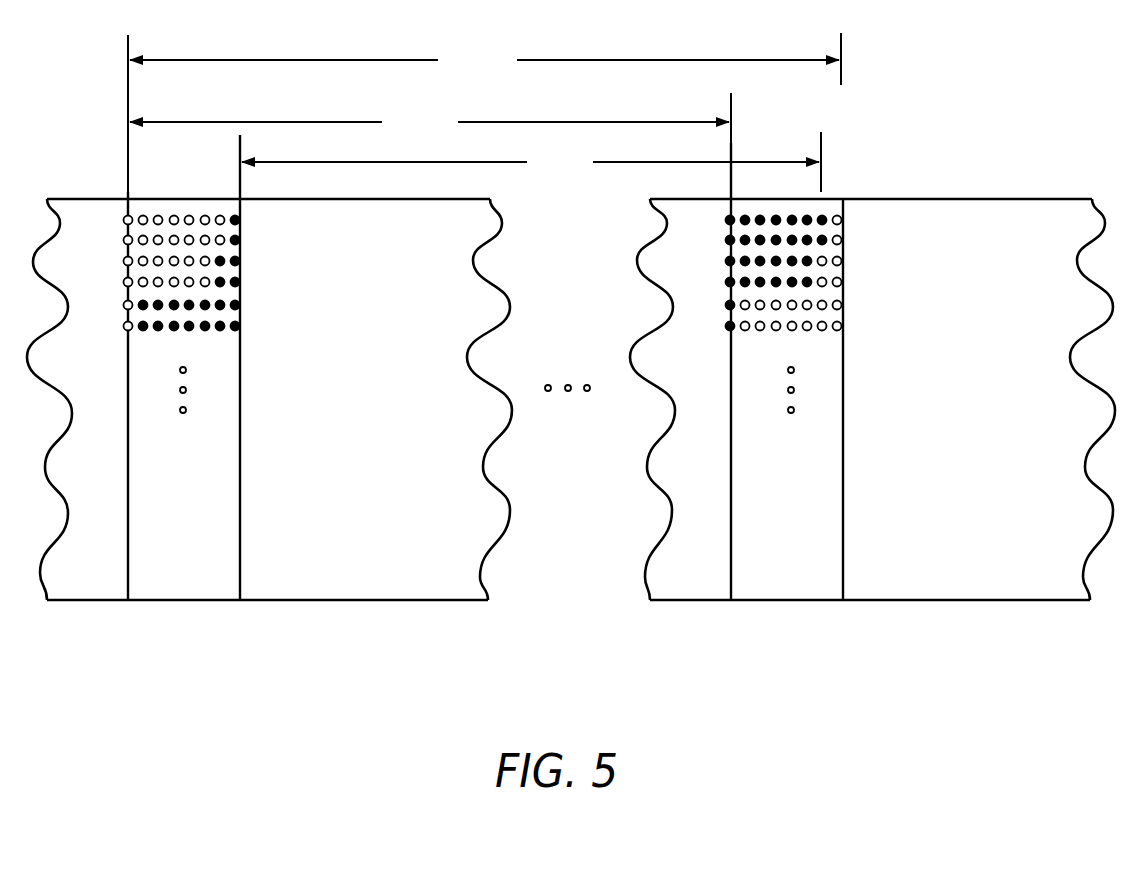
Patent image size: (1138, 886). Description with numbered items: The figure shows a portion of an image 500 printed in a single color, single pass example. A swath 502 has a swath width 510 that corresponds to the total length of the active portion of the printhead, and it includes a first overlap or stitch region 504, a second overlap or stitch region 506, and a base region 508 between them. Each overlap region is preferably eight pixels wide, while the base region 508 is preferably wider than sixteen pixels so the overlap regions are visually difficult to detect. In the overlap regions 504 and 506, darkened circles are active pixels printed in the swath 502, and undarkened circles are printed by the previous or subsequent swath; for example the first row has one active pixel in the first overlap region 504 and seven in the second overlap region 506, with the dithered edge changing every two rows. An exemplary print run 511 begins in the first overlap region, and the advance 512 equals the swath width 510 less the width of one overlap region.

The image 500 is at (946, 136).
The swath 502 is at (459, 608).
The first overlap or stitch region 504 is at (182, 367).
The second overlap or stitch region 506 is at (785, 371).
The base region 508 is at (485, 399).
The swath width 510 is at (484, 112).
The print run 511 is at (531, 162).
The advance 512 is at (430, 118).